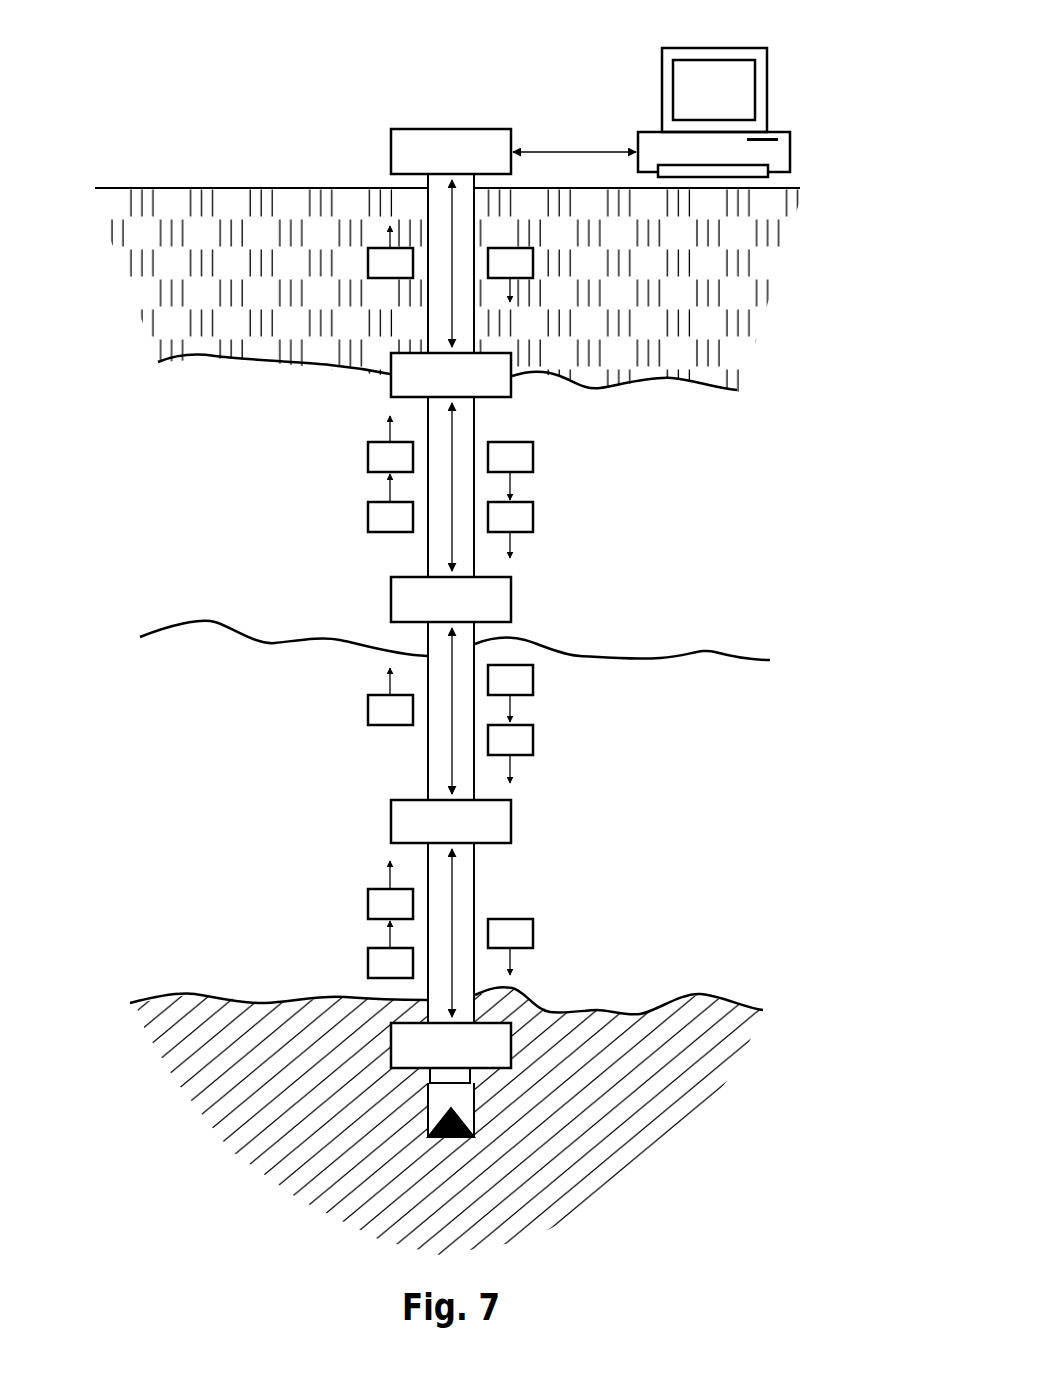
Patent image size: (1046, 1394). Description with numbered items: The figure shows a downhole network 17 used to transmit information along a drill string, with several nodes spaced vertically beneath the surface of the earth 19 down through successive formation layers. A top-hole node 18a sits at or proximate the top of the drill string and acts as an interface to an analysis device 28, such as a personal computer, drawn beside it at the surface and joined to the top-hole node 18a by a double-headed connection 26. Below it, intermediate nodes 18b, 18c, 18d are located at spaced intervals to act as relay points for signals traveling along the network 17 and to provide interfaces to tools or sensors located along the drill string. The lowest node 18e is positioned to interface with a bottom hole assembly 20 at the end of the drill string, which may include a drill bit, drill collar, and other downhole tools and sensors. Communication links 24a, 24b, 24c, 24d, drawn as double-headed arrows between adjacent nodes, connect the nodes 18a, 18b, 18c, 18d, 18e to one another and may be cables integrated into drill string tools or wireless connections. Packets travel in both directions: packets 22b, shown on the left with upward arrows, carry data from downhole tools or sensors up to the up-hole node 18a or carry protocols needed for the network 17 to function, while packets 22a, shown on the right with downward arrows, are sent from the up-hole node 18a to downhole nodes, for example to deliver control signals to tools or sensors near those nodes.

The downhole network 17 is at (297, 80).
The top-hole node 18a is at (494, 137).
The intermediate node 18b is at (500, 362).
The intermediate node 18c is at (500, 585).
The intermediate node 18d is at (500, 830).
The node 18e is at (500, 1040).
The surface of the earth 19 is at (222, 213).
The bottom hole assembly 20 is at (512, 1128).
The packet 22a is at (510, 263).
The packet 22b is at (383, 260).
The communication link 24a is at (452, 220).
The communication link 24b is at (452, 440).
The communication link 24c is at (452, 660).
The communication link 24d is at (452, 880).
The wireless link 26 is at (572, 150).
The analysis device 28 is at (766, 95).